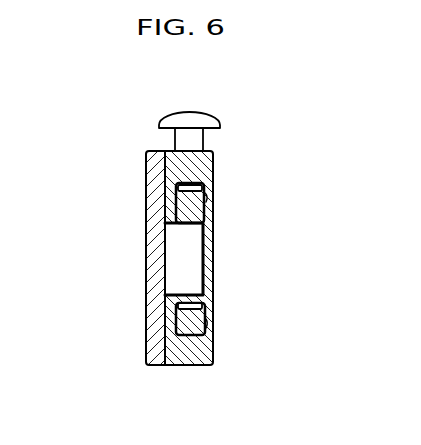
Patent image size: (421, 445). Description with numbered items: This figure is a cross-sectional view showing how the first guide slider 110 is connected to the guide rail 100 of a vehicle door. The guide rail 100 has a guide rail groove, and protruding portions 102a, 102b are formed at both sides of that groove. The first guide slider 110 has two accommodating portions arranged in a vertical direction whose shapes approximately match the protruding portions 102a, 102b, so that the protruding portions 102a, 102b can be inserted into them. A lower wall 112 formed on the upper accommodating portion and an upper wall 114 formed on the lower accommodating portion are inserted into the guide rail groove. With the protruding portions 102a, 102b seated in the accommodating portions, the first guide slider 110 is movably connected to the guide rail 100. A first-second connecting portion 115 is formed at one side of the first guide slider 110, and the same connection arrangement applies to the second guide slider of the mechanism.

The guide rail 100 is at (212, 265).
The first guide slider 110 is at (157, 213).
The lower wall 112 is at (183, 233).
The upper wall 114 is at (183, 293).
The protruding portion 102a is at (196, 201).
The protruding portion 102b is at (196, 325).
The first-second connecting portion 115 is at (188, 137).